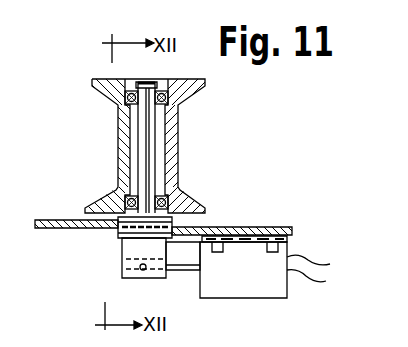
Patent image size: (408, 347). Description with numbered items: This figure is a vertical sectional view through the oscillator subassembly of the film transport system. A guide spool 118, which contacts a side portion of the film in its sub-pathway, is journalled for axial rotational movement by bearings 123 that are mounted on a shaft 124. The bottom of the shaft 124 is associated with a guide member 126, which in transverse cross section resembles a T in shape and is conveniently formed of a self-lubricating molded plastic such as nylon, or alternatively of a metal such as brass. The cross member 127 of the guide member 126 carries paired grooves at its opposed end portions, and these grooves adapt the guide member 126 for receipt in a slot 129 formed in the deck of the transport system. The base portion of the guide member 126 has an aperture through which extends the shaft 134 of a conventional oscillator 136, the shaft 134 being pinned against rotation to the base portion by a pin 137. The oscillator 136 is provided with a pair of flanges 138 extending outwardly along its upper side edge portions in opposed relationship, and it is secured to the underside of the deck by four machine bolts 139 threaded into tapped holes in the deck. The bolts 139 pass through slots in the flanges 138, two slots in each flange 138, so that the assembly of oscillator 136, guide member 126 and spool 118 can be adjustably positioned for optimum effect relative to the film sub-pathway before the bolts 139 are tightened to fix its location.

The guide spool 118 is at (117, 137).
The bearings 123 is at (170, 91).
The shaft 124 is at (178, 117).
The guide member 126 is at (122, 258).
The cross member 127 is at (116, 205).
The slot 129 is at (105, 232).
The shaft of oscillator 134 is at (183, 271).
The oscillator 136 is at (291, 262).
The pin 137 is at (146, 272).
The flanges 138 is at (248, 228).
The machine bolts 139 is at (268, 254).